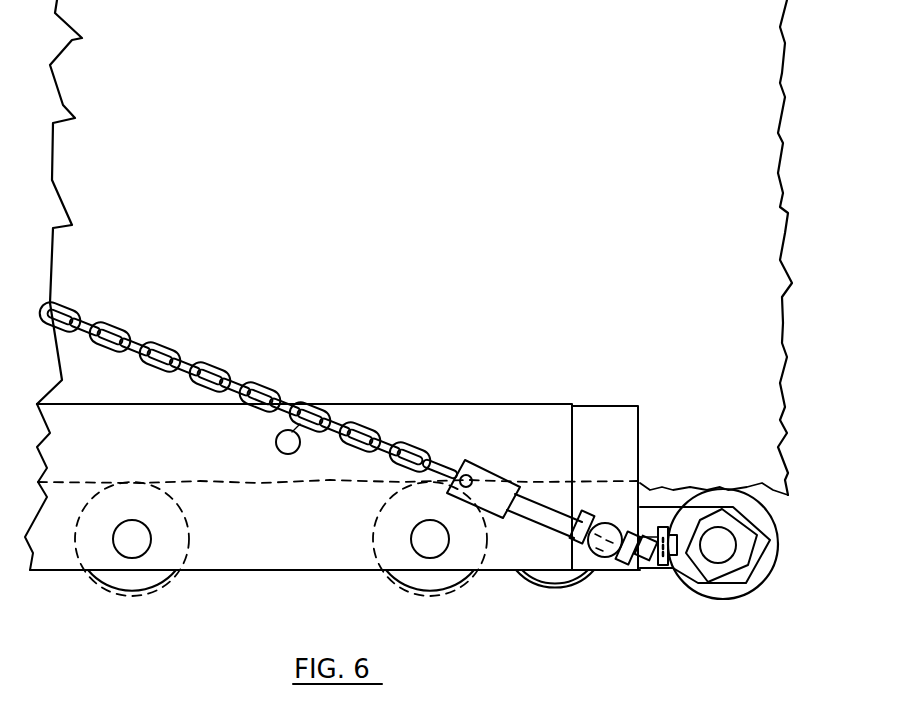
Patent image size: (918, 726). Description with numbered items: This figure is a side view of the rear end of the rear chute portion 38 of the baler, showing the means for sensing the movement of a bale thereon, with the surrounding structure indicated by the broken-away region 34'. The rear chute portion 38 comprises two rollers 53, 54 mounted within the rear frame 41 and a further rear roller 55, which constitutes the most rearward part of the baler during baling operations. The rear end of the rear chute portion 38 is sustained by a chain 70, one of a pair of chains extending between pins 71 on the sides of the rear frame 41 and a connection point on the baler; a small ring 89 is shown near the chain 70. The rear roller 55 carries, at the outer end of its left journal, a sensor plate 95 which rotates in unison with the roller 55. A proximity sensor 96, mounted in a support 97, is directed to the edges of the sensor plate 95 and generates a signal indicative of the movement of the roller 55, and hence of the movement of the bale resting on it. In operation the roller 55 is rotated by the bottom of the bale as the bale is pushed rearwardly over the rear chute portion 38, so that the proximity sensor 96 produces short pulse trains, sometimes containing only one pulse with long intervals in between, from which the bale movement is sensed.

The mine wall 34' is at (746, 247).
The rear frame 41 is at (272, 575).
The roller 53 is at (133, 598).
The roller 54 is at (430, 598).
The rear roller 55 is at (715, 602).
The chain 70 is at (172, 345).
The ring 89 is at (300, 424).
The rear chute portion 38 is at (516, 634).
The pin 71 is at (614, 560).
The proximity sensor 96 is at (655, 552).
The support 97 is at (661, 570).
The sensor plate 95 is at (755, 543).